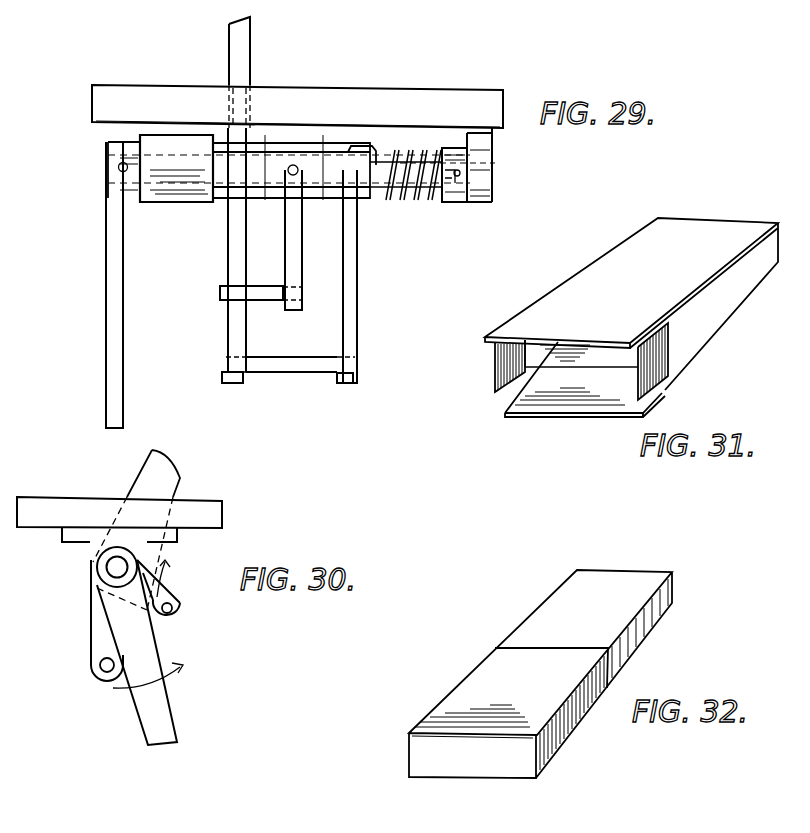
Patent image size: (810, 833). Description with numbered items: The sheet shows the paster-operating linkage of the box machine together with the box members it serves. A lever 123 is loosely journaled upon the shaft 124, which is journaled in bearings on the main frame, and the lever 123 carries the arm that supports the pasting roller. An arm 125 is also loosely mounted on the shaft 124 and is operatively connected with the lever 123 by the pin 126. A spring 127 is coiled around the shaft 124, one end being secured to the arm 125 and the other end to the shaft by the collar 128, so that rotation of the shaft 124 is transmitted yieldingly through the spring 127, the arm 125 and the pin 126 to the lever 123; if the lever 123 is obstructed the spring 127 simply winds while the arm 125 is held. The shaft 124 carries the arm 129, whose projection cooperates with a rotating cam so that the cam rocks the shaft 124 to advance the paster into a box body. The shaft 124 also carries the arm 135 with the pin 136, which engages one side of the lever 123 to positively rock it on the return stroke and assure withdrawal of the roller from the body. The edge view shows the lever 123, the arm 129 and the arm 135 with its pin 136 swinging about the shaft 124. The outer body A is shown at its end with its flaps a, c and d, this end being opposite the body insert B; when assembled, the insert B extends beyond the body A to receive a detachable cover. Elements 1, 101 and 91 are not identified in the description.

In FIG. 29, the frame plate 1 is at (443, 97).
In FIG. 29, the lever 123 is at (250, 64).
In FIG. 30, the lever 123 is at (100, 643).
In FIG. 29, the shaft 124 is at (375, 188).
In FIG. 30, the shaft 124 is at (105, 568).
In FIG. 29, the arm 125 is at (353, 323).
In FIG. 29, the pin 126 is at (303, 353).
In FIG. 30, the pin 126 is at (107, 677).
In FIG. 29, the spring 127 is at (392, 147).
In FIG. 29, the collar 128 is at (458, 180).
In FIG. 29, the spring rod 101 is at (453, 203).
In FIG. 29, the arm 129 is at (117, 320).
In FIG. 30, the arm 129 is at (158, 708).
In FIG. 29, the arm 135 is at (297, 245).
In FIG. 30, the arm 135 is at (160, 596).
In FIG. 29, the pin 136 is at (260, 293).
In FIG. 30, the pin 136 is at (172, 612).
In FIG. 30, the cam 91 is at (165, 483).
In FIG. 31, the body A is at (704, 306).
In FIG. 32, the body A is at (458, 693).
In FIG. 31, the body insert B is at (597, 393).
In FIG. 32, the body insert B is at (551, 641).
In FIG. 31, the end flap a is at (587, 323).
In FIG. 32, the end flap a is at (472, 751).
In FIG. 31, the side flap c is at (647, 370).
In FIG. 31, the side flap d is at (497, 364).